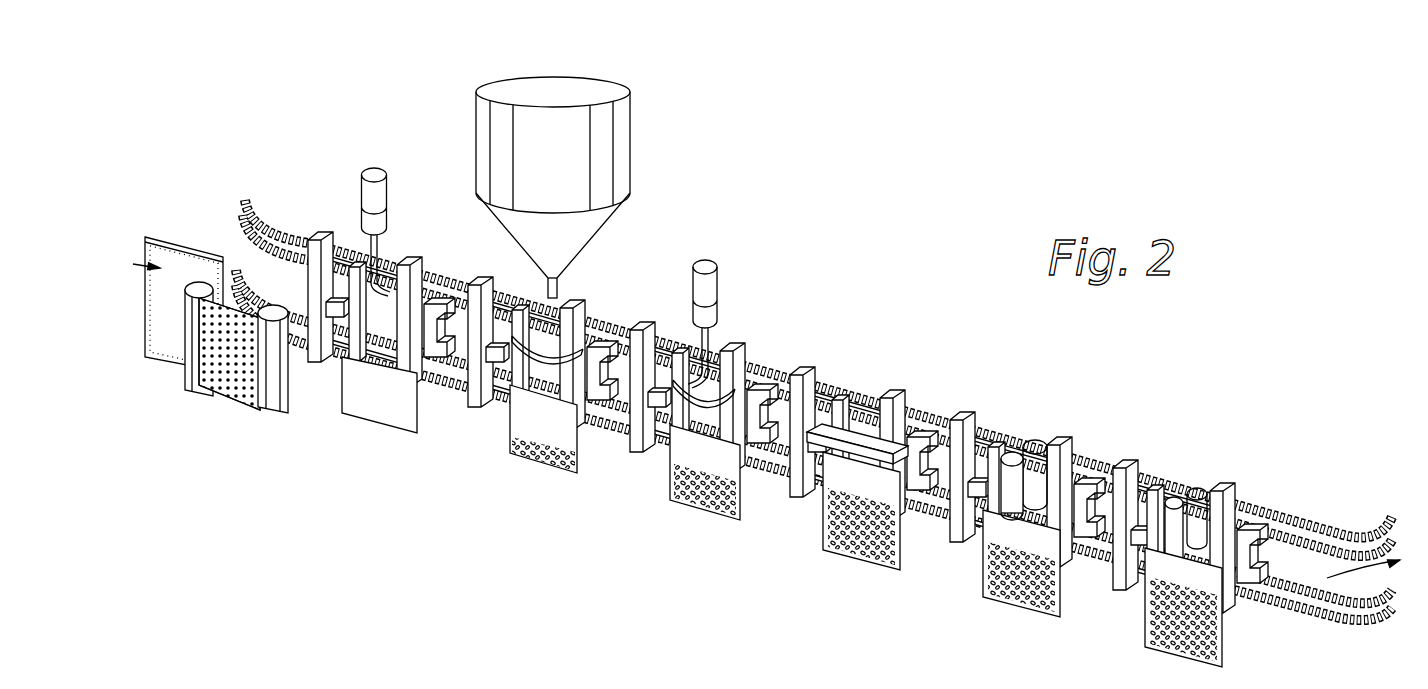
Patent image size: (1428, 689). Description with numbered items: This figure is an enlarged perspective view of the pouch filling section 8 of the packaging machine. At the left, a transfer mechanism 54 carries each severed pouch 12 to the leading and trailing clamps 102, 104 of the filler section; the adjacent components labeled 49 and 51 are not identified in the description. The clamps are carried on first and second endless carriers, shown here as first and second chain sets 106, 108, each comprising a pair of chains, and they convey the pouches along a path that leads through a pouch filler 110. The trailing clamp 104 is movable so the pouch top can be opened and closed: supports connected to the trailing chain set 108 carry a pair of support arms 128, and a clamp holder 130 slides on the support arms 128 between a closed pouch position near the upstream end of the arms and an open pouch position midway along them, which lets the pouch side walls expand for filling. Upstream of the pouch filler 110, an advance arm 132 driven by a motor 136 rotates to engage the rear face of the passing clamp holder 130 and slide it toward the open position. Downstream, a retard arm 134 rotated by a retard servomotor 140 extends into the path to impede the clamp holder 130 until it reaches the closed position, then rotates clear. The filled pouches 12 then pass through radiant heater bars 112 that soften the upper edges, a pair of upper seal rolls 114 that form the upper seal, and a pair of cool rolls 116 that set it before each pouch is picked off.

The pouch filling section 8 is at (835, 172).
The pouch 12 is at (168, 258).
The rollers 49 is at (277, 313).
The bag supply station 51 is at (178, 363).
The transfer mechanism 54 is at (233, 392).
The leading clamp 102 is at (430, 355).
The trailing clamp 104 is at (318, 232).
The first chain set 106 is at (1393, 590).
The second chain set 108 is at (1280, 607).
The pouch filler 110 is at (607, 160).
The radiant heater bars 112 is at (840, 447).
The upper seal rolls 114 is at (1010, 455).
The cool rolls 116 is at (1173, 500).
The support arms 128 is at (662, 390).
The clamp holder 130 is at (485, 405).
The advance arm 132 is at (373, 350).
The retard arm 134 is at (690, 352).
The motor 136 is at (402, 200).
The retard servomotor 140 is at (710, 298).